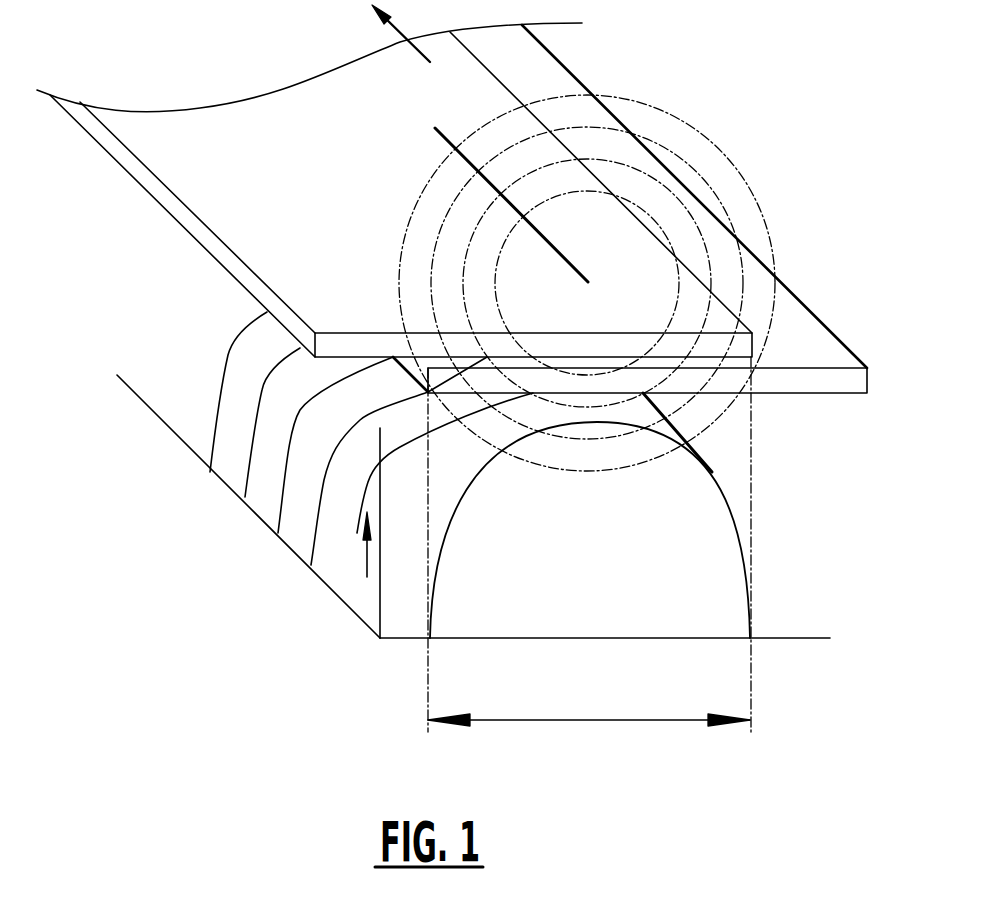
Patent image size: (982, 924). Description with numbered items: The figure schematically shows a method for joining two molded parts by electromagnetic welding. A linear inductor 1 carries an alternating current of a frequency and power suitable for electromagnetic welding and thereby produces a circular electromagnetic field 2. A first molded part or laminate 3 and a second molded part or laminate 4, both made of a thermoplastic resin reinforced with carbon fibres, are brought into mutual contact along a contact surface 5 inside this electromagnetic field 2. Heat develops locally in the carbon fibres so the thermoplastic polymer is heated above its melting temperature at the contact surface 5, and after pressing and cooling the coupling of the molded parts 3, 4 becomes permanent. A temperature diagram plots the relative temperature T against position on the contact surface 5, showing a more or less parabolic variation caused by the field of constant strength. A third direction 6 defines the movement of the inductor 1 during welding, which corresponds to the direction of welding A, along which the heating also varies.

The linear inductor 1 is at (447, 145).
The circular electromagnetic field 2 is at (770, 172).
The first molded part or laminate 3 is at (341, 348).
The second molded part or laminate 4 is at (833, 378).
The contact surface 5 is at (877, 322).
The third direction 6 is at (247, 487).
The direction of welding A is at (397, 33).
The relative temperature T is at (355, 544).